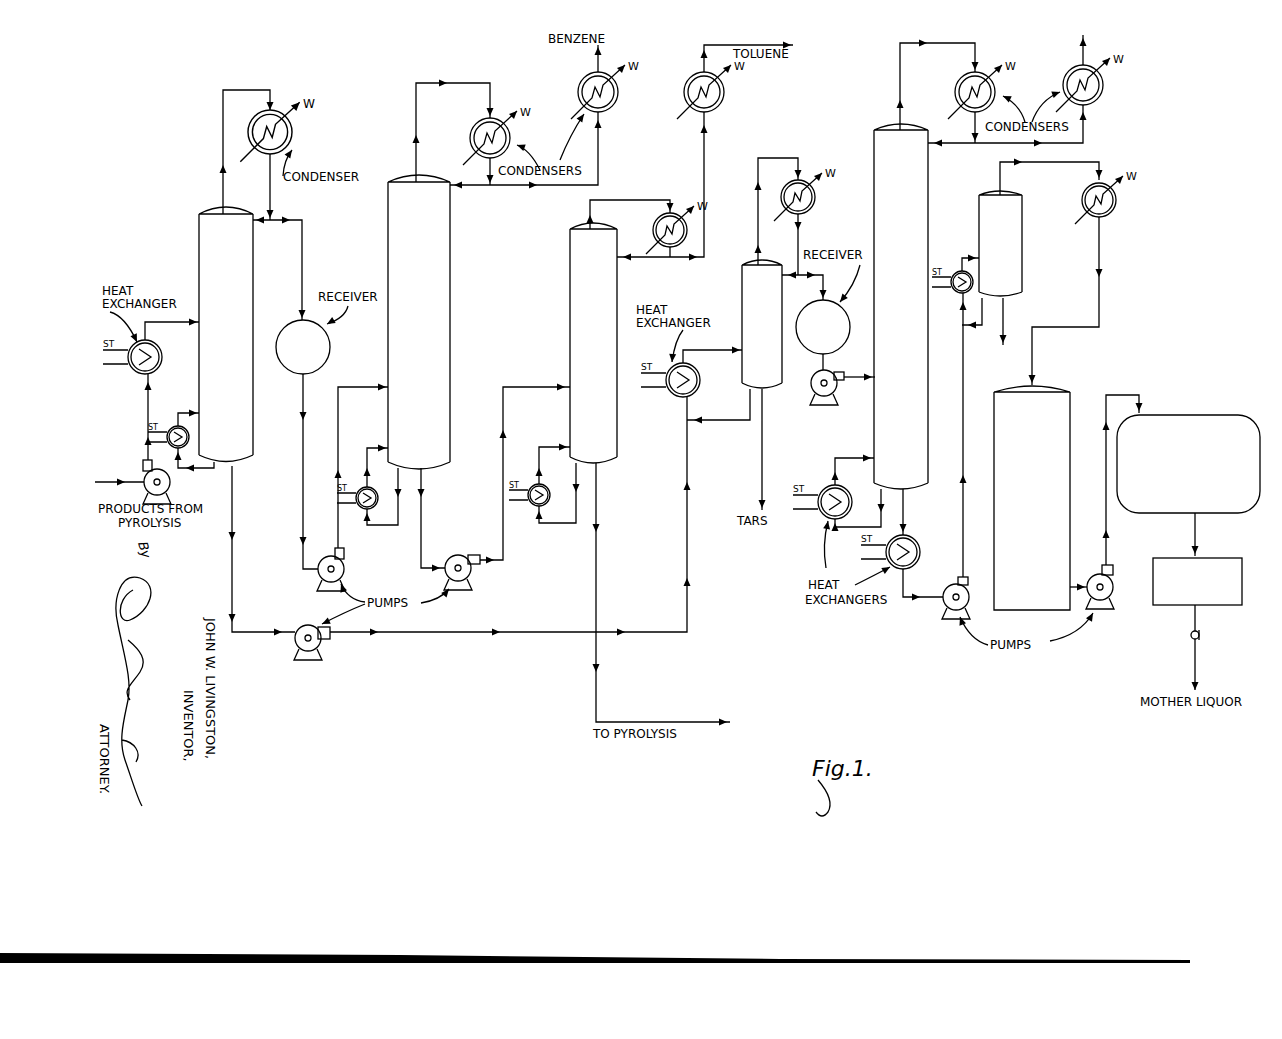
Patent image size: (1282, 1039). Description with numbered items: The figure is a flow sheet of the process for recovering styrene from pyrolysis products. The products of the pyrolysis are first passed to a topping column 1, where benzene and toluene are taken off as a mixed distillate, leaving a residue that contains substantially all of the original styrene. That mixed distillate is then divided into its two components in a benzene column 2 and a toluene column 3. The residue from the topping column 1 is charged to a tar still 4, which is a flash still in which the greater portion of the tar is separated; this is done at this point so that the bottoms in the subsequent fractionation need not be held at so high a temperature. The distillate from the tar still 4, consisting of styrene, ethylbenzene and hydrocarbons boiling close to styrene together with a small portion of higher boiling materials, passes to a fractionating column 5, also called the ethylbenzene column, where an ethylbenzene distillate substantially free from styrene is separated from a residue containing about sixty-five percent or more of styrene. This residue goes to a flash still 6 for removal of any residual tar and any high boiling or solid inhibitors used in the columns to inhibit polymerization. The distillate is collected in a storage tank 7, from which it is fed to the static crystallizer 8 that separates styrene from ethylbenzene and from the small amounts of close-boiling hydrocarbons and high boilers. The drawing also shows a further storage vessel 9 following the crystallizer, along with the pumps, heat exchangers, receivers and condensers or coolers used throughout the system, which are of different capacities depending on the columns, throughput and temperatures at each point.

The topping column 1 is at (247, 303).
The benzene column 2 is at (447, 297).
The toluene column 3 is at (619, 292).
The tar still 4 is at (745, 284).
The fractionating column 5 is at (873, 143).
The flash still 6 is at (1017, 256).
The storage tank 7 is at (1057, 421).
The static crystallizer 8 is at (1232, 418).
The storage 9 is at (1218, 563).